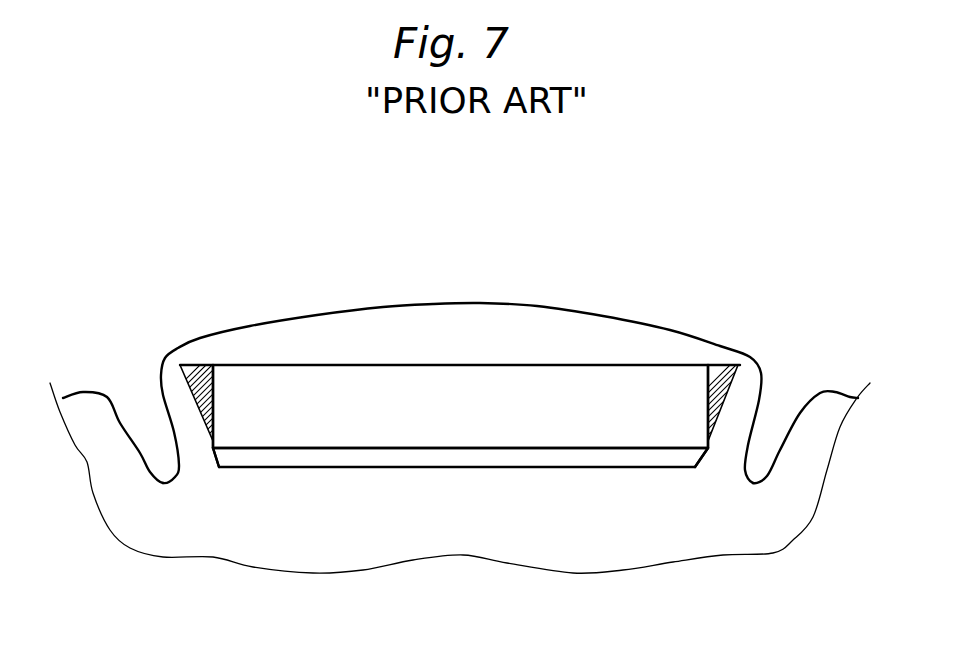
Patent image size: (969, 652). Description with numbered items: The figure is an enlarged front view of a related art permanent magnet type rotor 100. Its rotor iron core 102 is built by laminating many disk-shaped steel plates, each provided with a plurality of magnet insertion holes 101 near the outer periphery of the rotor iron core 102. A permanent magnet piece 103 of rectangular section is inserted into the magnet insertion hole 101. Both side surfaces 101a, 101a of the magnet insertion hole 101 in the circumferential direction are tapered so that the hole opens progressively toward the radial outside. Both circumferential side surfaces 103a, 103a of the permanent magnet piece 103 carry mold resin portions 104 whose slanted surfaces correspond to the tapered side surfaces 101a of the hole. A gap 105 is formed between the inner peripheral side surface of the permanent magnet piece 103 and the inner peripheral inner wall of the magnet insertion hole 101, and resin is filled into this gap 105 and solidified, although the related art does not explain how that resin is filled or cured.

The rotor 100 is at (534, 252).
The magnet insertion hole 101 is at (472, 366).
The side surface of the magnet insertion hole 101a is at (240, 467).
The rotor iron core 102 is at (630, 310).
The permanent magnet piece 103 is at (335, 395).
The side surface of the permanent magnet piece 103a is at (192, 365).
The mold resin portion 104 is at (177, 385).
The gap 105 is at (470, 457).